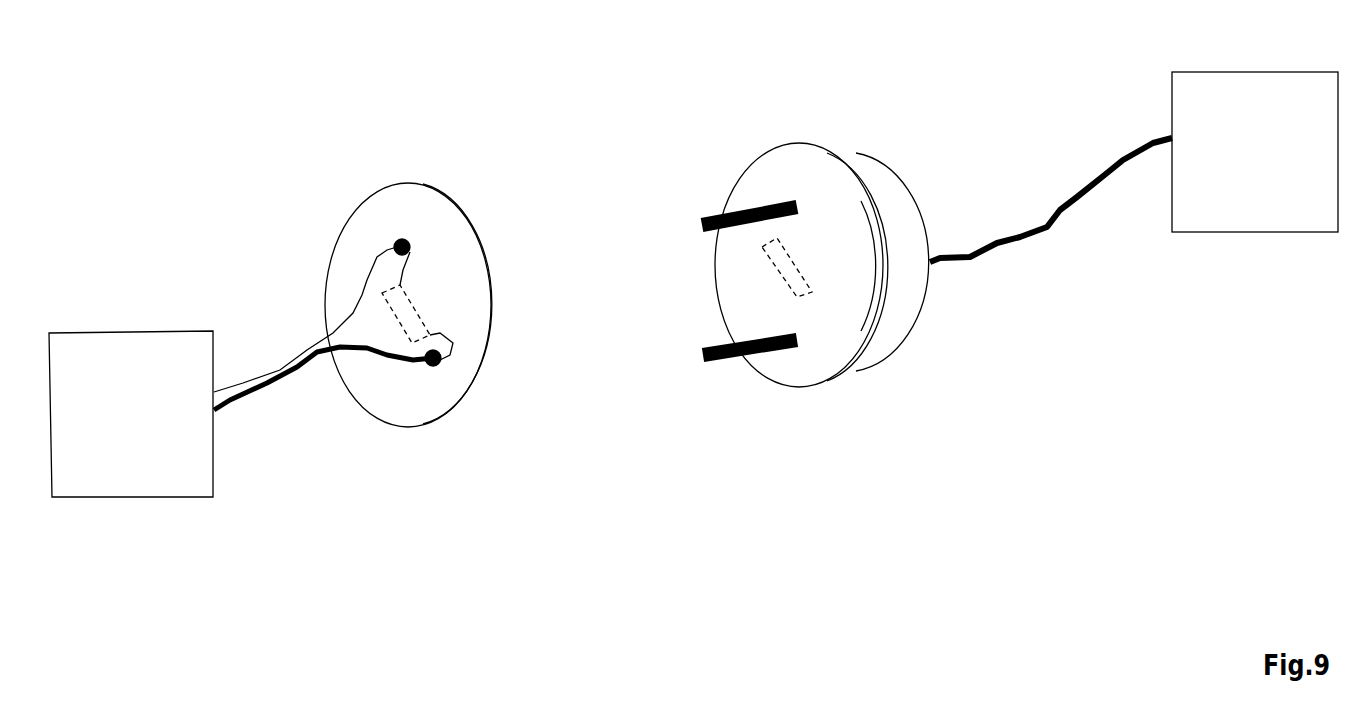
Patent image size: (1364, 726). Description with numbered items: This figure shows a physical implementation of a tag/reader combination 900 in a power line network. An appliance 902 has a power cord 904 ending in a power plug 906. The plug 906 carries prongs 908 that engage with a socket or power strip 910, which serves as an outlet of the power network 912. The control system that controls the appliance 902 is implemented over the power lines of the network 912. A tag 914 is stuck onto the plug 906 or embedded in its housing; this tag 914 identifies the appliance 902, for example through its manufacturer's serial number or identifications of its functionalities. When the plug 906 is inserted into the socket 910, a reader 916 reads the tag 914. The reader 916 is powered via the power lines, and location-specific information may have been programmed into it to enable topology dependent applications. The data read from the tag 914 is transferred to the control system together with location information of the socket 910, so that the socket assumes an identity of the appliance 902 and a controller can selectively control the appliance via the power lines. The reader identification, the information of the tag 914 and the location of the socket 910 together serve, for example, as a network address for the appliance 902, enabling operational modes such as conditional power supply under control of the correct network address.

The tag/reader combination 900 is at (1002, 659).
The appliance 902 is at (1303, 87).
The power cord 904 is at (1107, 170).
The power plug 906 is at (817, 368).
The prongs 908 is at (702, 240).
The socket 910 is at (408, 408).
The power network 912 is at (150, 480).
The tag 914 is at (788, 270).
The reader 916 is at (405, 308).